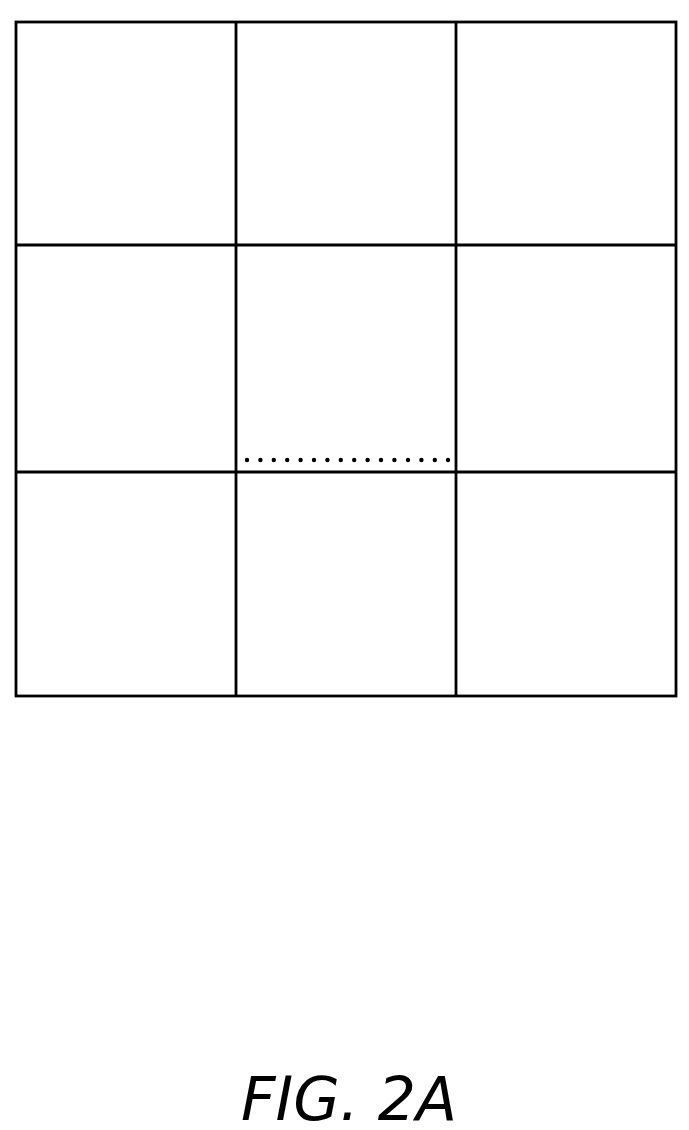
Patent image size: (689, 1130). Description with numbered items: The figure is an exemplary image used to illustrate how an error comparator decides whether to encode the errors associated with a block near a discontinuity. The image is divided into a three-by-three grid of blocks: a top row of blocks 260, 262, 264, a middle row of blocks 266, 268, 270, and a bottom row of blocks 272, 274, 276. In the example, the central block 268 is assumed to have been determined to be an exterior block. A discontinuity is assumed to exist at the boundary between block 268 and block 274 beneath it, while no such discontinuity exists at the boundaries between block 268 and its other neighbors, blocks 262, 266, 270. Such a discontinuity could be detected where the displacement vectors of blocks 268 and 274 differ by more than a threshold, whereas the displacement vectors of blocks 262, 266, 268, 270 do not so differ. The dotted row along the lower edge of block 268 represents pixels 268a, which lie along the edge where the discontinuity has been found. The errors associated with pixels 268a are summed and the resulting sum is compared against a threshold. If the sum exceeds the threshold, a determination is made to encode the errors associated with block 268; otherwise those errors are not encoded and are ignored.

The block 260 is at (125, 126).
The block 262 is at (349, 125).
The block 264 is at (564, 125).
The block 266 is at (125, 357).
The block 268 is at (348, 357).
The pixels 268a is at (415, 458).
The block 270 is at (564, 357).
The block 272 is at (125, 588).
The block 274 is at (348, 588).
The block 276 is at (564, 588).